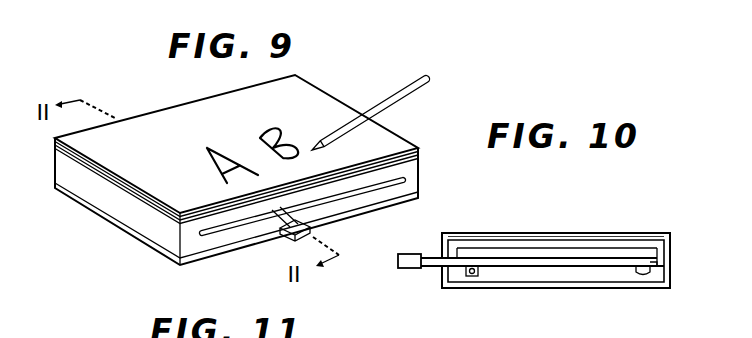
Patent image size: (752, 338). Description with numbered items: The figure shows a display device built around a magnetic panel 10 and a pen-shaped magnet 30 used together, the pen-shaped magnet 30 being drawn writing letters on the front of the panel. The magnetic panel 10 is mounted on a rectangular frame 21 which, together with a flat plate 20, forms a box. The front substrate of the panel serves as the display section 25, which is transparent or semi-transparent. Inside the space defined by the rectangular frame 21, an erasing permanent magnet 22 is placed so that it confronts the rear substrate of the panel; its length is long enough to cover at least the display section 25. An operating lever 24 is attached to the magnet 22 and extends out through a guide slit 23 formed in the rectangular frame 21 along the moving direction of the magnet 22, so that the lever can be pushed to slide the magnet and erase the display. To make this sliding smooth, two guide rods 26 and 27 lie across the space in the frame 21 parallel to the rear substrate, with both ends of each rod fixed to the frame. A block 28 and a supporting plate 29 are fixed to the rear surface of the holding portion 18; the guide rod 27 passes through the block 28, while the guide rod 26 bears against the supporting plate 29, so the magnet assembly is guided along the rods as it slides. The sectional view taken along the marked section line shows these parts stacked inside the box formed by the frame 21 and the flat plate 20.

In FIG. 9, the magnetic panel 10 is at (175, 117).
In FIG. 10, the magnetic panel 10 is at (577, 240).
In FIG. 10, the holding portion 18 is at (578, 268).
In FIG. 9, the flat plate 20 is at (140, 238).
In FIG. 10, the flat plate 20 is at (600, 288).
In FIG. 9, the rectangular frame 21 is at (105, 198).
In FIG. 10, the rectangular frame 21 is at (667, 252).
In FIG. 10, the erasing permanent magnet 22 is at (624, 250).
In FIG. 9, the guide slit 23 is at (228, 226).
In FIG. 10, the guide slit 23 is at (441, 258).
In FIG. 9, the operating lever 24 is at (315, 228).
In FIG. 10, the operating lever 24 is at (432, 268).
In FIG. 10, the display section 25 is at (500, 240).
In FIG. 10, the guide rod 26 is at (642, 273).
In FIG. 10, the guide rod 27 is at (482, 270).
In FIG. 10, the block 28 is at (468, 280).
In FIG. 10, the supporting plate 29 is at (654, 266).
In FIG. 9, the pen-shaped magnet 30 is at (372, 110).